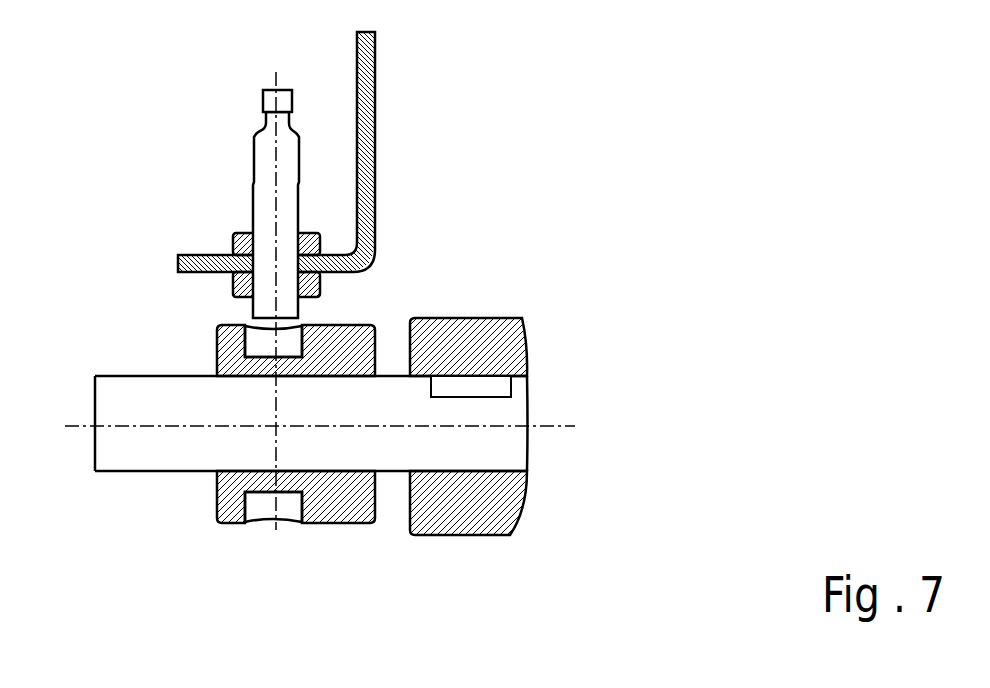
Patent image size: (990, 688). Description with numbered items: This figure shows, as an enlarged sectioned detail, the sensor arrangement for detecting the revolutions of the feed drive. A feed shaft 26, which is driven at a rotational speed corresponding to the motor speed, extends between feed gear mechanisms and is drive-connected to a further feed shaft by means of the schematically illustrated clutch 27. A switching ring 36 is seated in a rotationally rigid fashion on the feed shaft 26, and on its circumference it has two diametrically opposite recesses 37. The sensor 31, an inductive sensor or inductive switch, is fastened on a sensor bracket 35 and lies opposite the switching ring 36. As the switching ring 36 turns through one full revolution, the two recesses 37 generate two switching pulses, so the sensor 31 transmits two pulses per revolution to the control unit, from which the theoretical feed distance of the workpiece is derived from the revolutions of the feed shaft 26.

The feed shaft 26 is at (147, 396).
The clutch 27 is at (497, 335).
The sensor 31 is at (232, 175).
The sensor bracket 35 is at (376, 146).
The switching ring 36 is at (217, 510).
The recess 37 is at (267, 343).